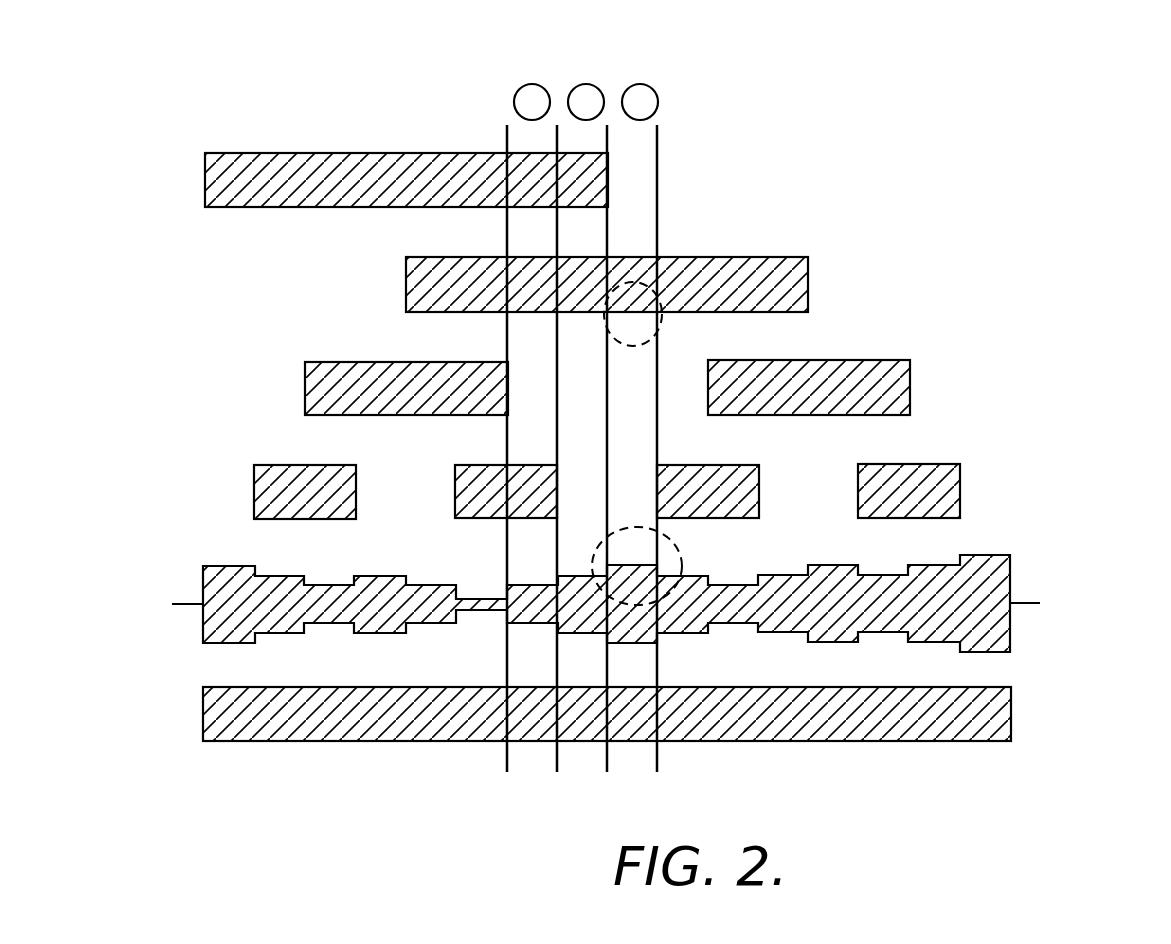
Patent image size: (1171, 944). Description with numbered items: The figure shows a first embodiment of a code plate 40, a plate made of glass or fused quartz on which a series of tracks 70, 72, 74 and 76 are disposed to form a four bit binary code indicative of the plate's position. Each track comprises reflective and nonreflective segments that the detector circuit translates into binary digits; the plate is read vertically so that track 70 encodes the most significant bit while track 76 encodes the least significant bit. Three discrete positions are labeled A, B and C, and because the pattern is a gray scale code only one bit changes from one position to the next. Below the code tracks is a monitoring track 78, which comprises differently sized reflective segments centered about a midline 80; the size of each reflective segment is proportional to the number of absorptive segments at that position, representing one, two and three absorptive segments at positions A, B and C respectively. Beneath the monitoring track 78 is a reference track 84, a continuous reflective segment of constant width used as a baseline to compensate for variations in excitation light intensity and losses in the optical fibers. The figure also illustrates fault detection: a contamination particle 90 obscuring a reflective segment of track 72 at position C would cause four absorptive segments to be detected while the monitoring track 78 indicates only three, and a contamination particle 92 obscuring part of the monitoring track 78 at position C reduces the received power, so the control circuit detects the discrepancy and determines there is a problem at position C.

The code plate 40 is at (895, 110).
The track 70 is at (1155, 179).
The track 72 is at (1155, 283).
The track 74 is at (1150, 387).
The track 76 is at (1150, 490).
The monitoring track 78 is at (1068, 575).
The midline 80 is at (1040, 603).
The reference track 84 is at (970, 742).
The contamination particle 90 is at (660, 332).
The contamination particle 92 is at (686, 549).